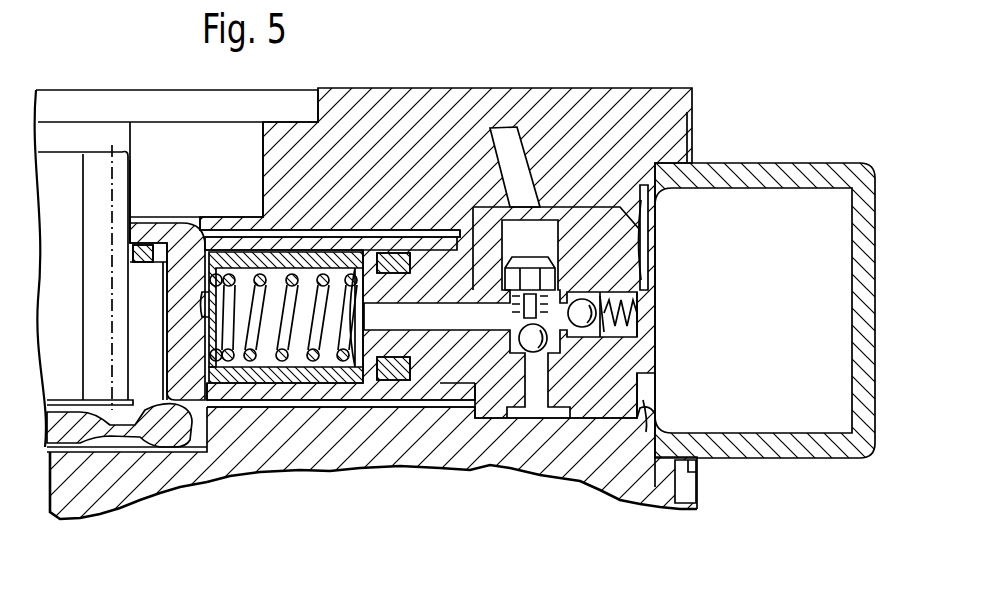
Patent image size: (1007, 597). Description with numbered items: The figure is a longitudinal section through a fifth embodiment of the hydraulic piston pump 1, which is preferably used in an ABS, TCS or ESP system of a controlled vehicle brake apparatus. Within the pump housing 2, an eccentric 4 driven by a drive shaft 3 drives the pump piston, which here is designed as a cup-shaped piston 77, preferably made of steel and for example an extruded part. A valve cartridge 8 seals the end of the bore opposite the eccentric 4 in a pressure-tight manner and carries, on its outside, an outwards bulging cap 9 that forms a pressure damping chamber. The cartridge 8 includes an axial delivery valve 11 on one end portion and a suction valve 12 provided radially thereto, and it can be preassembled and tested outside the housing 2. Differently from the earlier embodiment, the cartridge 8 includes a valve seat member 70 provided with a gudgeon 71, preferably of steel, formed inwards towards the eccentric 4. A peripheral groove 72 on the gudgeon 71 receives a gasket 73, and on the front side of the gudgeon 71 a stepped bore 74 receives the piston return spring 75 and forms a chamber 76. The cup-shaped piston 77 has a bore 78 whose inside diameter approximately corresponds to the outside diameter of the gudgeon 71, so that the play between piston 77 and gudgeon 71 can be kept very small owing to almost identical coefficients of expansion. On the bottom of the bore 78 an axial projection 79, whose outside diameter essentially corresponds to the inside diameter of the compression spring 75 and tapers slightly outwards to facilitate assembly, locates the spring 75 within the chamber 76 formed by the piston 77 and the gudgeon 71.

The piston pump 1 is at (709, 82).
The pump housing 2 is at (83, 497).
The drive shaft 3 is at (58, 178).
The eccentric 4 is at (130, 440).
The valve cartridge 8 is at (660, 249).
The cap 9 is at (750, 176).
The delivery valve 11 is at (660, 300).
The suction valve 12 is at (537, 252).
The valve seat member 70 is at (656, 354).
The gudgeon 71 is at (357, 376).
The peripheral groove 72 is at (391, 374).
The gasket 73 is at (403, 382).
The stepped bore 74 is at (273, 364).
The piston return spring 75 is at (245, 347).
The chamber 76 is at (305, 298).
The cup-shaped piston 77 is at (288, 240).
The bore 78 is at (448, 388).
The axial projection 79 is at (210, 316).